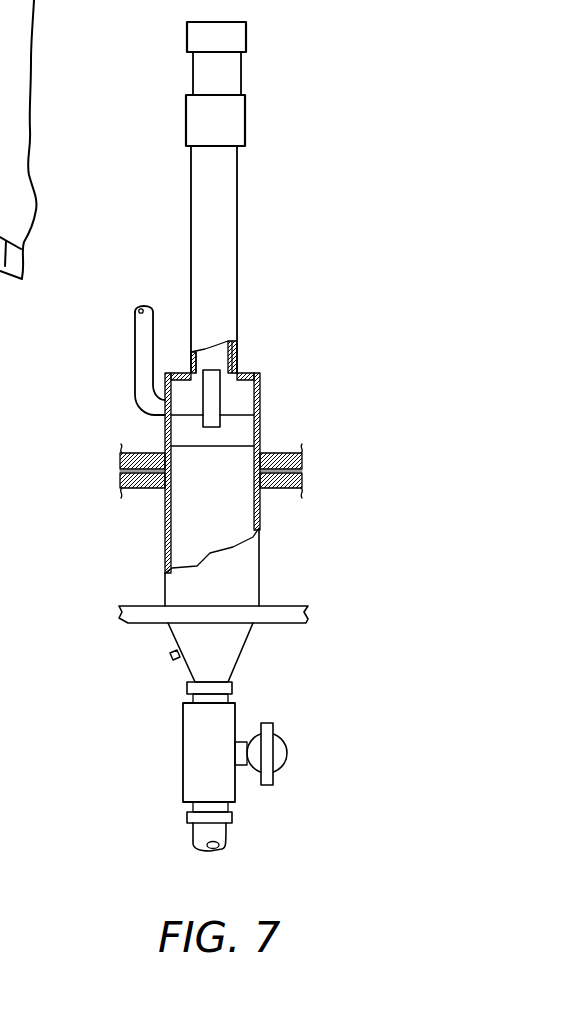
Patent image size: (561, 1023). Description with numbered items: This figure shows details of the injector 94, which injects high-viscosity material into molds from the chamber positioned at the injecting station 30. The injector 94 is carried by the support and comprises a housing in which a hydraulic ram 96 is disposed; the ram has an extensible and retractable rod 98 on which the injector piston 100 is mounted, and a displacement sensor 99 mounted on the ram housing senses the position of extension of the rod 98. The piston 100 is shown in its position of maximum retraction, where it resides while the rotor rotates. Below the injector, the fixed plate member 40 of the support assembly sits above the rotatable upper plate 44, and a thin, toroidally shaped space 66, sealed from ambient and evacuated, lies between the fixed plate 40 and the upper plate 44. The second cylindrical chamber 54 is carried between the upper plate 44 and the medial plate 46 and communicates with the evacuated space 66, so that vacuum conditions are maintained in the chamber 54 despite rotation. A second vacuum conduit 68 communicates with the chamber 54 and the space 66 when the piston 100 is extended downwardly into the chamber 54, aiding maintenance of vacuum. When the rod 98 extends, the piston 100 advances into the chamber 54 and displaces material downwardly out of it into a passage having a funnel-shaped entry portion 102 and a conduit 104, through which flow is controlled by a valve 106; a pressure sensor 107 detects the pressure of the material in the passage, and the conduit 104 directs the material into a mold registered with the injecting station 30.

The displacement sensor 99 is at (232, 72).
The injector 94 is at (241, 185).
The hydraulic ram 96 is at (233, 352).
The rod 98 is at (222, 395).
The injector piston 100 is at (237, 432).
The second vacuum conduit 68 is at (143, 335).
The fixed plate member 40 is at (130, 452).
The toroidally shaped space 66 is at (157, 472).
The upper plate 44 is at (145, 492).
The second cylindrical chamber 54 is at (232, 522).
The injecting station 30 is at (290, 580).
The medial plate 46 is at (142, 621).
The funnel-shaped entry portion 102 is at (248, 645).
The pressure sensor 107 is at (178, 665).
The valve 106 is at (287, 753).
The conduit 104 is at (185, 822).